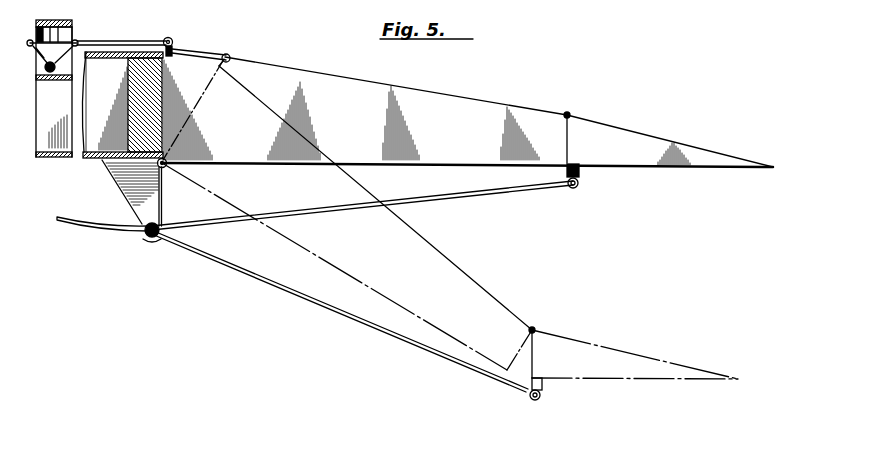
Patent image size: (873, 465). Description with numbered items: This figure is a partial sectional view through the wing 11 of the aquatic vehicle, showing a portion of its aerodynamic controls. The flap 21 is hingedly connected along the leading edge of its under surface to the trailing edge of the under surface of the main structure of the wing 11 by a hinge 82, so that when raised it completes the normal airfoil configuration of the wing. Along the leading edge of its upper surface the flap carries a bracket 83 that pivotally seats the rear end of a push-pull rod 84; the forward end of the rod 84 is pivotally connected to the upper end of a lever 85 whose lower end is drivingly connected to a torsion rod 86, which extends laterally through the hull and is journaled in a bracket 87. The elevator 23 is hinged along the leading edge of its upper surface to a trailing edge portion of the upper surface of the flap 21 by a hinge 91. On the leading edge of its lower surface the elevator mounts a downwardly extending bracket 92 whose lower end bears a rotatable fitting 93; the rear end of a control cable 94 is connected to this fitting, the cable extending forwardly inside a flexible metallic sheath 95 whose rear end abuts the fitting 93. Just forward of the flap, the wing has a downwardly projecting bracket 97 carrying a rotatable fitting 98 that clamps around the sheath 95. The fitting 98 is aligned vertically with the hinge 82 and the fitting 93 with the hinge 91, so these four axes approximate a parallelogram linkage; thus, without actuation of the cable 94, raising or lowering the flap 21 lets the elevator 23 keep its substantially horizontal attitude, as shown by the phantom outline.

The wing 11 is at (85, 151).
The flap 21 is at (452, 106).
The elevator 23 is at (668, 140).
The hinge 82 is at (164, 168).
The bracket 83 is at (176, 50).
The push-pull rod 84 is at (132, 45).
The lever 85 is at (31, 40).
The torsion rod 86 is at (54, 92).
The bracket 87 is at (56, 68).
The hinge 91 is at (567, 115).
The bracket 92 is at (581, 176).
The rotatable fitting 93 is at (573, 189).
The control cable 94 is at (57, 220).
The flexible metallic sheath 95 is at (468, 196).
The bracket 97 is at (120, 189).
The rotatable fitting 98 is at (140, 216).